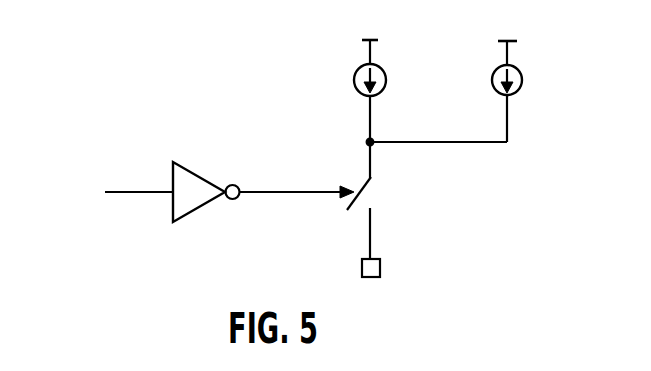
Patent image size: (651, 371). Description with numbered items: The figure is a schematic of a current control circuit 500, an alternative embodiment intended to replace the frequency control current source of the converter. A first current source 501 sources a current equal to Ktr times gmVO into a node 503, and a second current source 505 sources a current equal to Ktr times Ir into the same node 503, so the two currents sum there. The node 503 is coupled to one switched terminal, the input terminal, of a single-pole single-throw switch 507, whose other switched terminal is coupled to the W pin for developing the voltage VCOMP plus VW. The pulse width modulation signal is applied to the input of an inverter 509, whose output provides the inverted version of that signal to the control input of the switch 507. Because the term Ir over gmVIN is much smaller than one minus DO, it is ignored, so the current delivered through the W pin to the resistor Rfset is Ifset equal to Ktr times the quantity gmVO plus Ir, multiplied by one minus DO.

The current control circuit 500 is at (174, 90).
The first current source 501 is at (385, 63).
The node 503 is at (373, 137).
The current source 505 is at (520, 63).
The SPST switch 507 is at (371, 180).
The inverter 509 is at (203, 178).